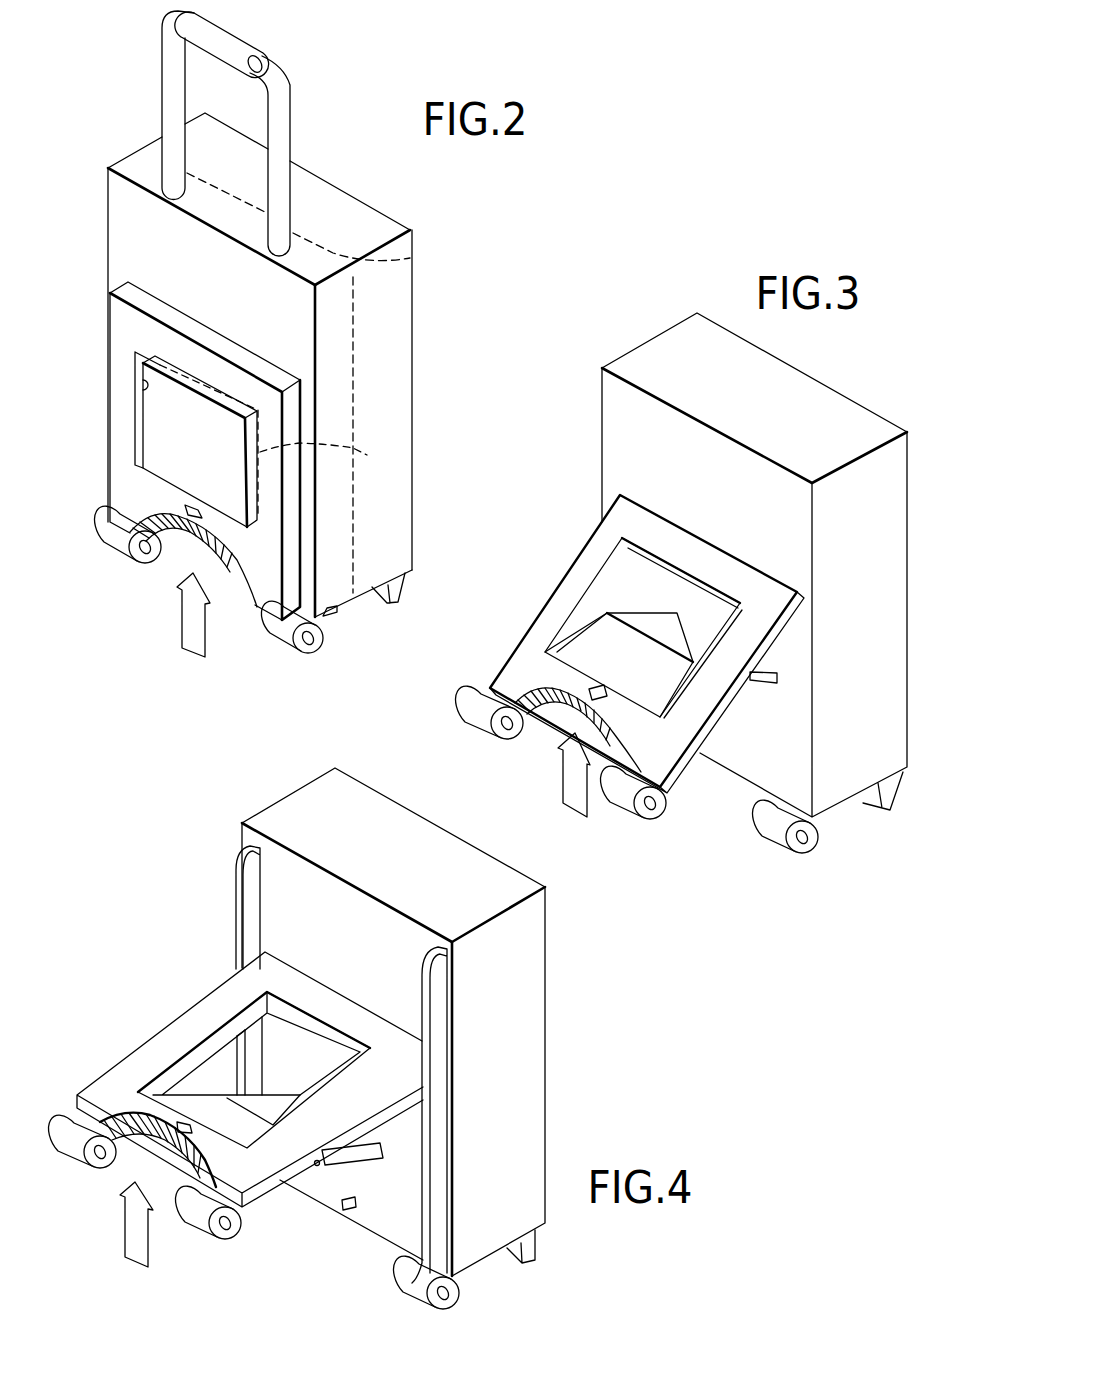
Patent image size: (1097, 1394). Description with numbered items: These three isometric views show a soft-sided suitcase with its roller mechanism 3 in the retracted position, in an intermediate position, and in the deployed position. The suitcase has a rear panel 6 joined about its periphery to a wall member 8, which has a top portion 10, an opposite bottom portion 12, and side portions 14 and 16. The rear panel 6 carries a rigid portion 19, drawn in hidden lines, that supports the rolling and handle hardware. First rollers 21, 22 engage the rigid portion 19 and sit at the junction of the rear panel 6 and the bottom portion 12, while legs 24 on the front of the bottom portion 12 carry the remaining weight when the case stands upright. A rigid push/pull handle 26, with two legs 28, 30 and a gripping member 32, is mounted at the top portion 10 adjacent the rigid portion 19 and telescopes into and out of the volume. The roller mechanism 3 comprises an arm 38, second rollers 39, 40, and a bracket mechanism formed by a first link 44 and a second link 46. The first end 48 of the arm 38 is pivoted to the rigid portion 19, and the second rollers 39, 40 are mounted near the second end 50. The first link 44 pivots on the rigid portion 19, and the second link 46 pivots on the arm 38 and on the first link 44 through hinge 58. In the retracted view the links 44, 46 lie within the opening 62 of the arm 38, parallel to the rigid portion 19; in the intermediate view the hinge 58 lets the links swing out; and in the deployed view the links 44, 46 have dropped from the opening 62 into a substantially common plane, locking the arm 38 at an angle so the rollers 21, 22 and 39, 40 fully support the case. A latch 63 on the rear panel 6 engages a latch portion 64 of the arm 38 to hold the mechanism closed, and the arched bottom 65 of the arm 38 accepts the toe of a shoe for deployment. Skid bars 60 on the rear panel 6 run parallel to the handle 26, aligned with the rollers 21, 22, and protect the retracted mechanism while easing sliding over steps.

In FIG. 2, the roller mechanism 3 is at (211, 457).
In FIG. 3, the roller mechanism 3 is at (672, 648).
In FIG. 4, the roller mechanism 3 is at (250, 1099).
In FIG. 2, the rear panel 6 is at (127, 212).
In FIG. 4, the rear panel 6 is at (283, 917).
In FIG. 2, the wall member 8 is at (397, 402).
In FIG. 4, the wall member 8 is at (533, 1012).
In FIG. 2, the top portion 10 is at (357, 217).
In FIG. 3, the top portion 10 is at (754, 583).
In FIG. 4, the top portion 10 is at (310, 793).
In FIG. 2, the bottom portion 12 is at (347, 607).
In FIG. 4, the bottom portion 12 is at (488, 1260).
In FIG. 2, the side portion 14 is at (400, 318).
In FIG. 2, the side portion 16 is at (108, 243).
In FIG. 2, the rigid portion 19 is at (412, 260).
In FIG. 2, the first roller 21 is at (283, 645).
In FIG. 4, the first roller 21 is at (417, 1287).
In FIG. 2, the first roller 22 is at (100, 533).
In FIG. 2, the legs 24 is at (395, 592).
In FIG. 2, the push/pull handle 26 is at (204, 130).
In FIG. 2, the leg 28 is at (283, 125).
In FIG. 2, the leg 30 is at (173, 110).
In FIG. 2, the gripping member 32 is at (236, 42).
In FIG. 2, the arm 38 is at (273, 505).
In FIG. 3, the arm 38 is at (647, 743).
In FIG. 4, the arm 38 is at (240, 1170).
In FIG. 2, the second roller 39 is at (257, 630).
In FIG. 4, the second roller 39 is at (223, 1242).
In FIG. 2, the second roller 40 is at (122, 553).
In FIG. 4, the second roller 40 is at (75, 1158).
In FIG. 2, the first link 44 is at (325, 459).
In FIG. 3, the first link 44 is at (658, 622).
In FIG. 4, the first link 44 is at (273, 1105).
In FIG. 2, the second link 46 is at (152, 440).
In FIG. 3, the second link 46 is at (668, 678).
In FIG. 4, the second link 46 is at (190, 1103).
In FIG. 2, the first end 48 is at (197, 362).
In FIG. 2, the second end 50 is at (257, 585).
In FIG. 4, the hinge 58 is at (313, 1163).
In FIG. 4, the skid bars 60 is at (240, 875).
In FIG. 2, the opening 62 is at (143, 390).
In FIG. 3, the opening 62 is at (580, 617).
In FIG. 4, the opening 62 is at (300, 1015).
In FIG. 4, the latch 63 is at (347, 1210).
In FIG. 2, the latch portion 64 is at (190, 508).
In FIG. 3, the latch portion 64 is at (585, 687).
In FIG. 4, the latch portion 64 is at (183, 1127).
In FIG. 2, the bottom 65 is at (207, 523).
In FIG. 3, the bottom 65 is at (613, 700).
In FIG. 4, the bottom 65 is at (197, 1143).